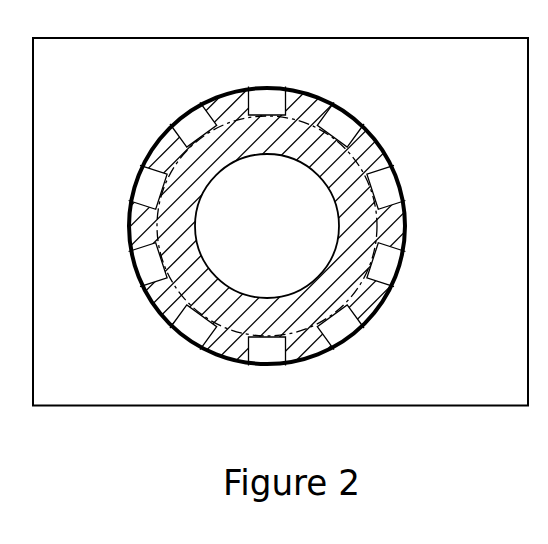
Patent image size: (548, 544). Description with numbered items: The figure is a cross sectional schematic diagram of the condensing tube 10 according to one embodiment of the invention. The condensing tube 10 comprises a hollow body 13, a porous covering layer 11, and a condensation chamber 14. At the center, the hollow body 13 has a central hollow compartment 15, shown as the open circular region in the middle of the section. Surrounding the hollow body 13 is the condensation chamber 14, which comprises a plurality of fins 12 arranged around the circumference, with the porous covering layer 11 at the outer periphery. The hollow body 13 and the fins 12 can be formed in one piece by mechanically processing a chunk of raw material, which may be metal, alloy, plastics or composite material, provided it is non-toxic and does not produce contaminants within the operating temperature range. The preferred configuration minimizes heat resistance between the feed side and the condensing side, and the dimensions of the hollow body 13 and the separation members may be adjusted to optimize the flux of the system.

The condensing tube 10 is at (79, 70).
The porous covering layer 11 is at (403, 222).
The fins 12 is at (373, 315).
The hollow body 13 is at (343, 172).
The condensation chamber 14 is at (383, 267).
The central hollow compartment 15 is at (237, 205).